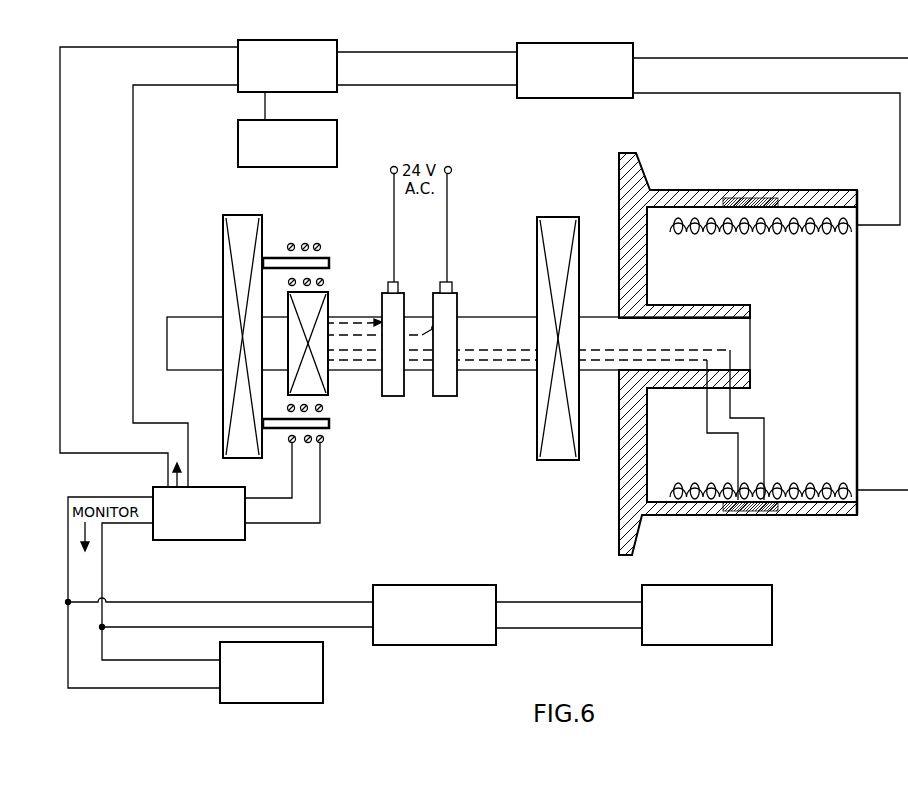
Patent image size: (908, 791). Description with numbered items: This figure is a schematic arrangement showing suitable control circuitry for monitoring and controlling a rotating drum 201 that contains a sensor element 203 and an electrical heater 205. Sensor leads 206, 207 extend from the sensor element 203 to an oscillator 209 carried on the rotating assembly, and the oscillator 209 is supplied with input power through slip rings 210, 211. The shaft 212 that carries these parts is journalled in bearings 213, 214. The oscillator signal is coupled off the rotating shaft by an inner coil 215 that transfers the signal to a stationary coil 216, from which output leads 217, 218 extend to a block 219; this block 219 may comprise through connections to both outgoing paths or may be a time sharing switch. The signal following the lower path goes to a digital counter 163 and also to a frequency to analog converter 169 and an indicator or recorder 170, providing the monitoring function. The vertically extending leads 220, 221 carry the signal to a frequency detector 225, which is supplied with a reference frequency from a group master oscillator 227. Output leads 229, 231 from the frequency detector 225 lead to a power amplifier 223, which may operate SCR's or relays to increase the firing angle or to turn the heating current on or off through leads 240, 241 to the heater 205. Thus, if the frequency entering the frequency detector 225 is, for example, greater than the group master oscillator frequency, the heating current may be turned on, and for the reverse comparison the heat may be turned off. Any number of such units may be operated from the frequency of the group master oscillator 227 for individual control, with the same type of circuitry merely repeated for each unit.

The digital counter 163 is at (323, 690).
The frequency to analog converter 169 is at (430, 585).
The indicator or recorder 170 is at (690, 585).
The drum 201 is at (805, 190).
The sensor element 203 is at (745, 198).
The electrical heater 205 is at (800, 486).
The sensor lead 206 is at (738, 450).
The sensor lead 207 is at (764, 447).
The oscillator 209 is at (328, 302).
The slip ring 210 is at (395, 282).
The slip ring 211 is at (450, 282).
The shaft 212 is at (483, 317).
The bearing 213 is at (562, 204).
The bearing 214 is at (262, 217).
The inner coil 215 is at (324, 283).
The stationary coil 216 is at (321, 247).
The output lead 217 is at (320, 485).
The output lead 218 is at (292, 478).
The block 219 is at (240, 540).
The vertical extending lead 220 is at (60, 256).
The vertical extending lead 221 is at (133, 248).
The power amplifier 223 is at (633, 45).
The frequency detector 225 is at (337, 42).
The group master oscillator 227 is at (337, 138).
The output lead 229 is at (420, 52).
The output lead 231 is at (425, 85).
The lead 240 is at (772, 58).
The lead 241 is at (770, 93).